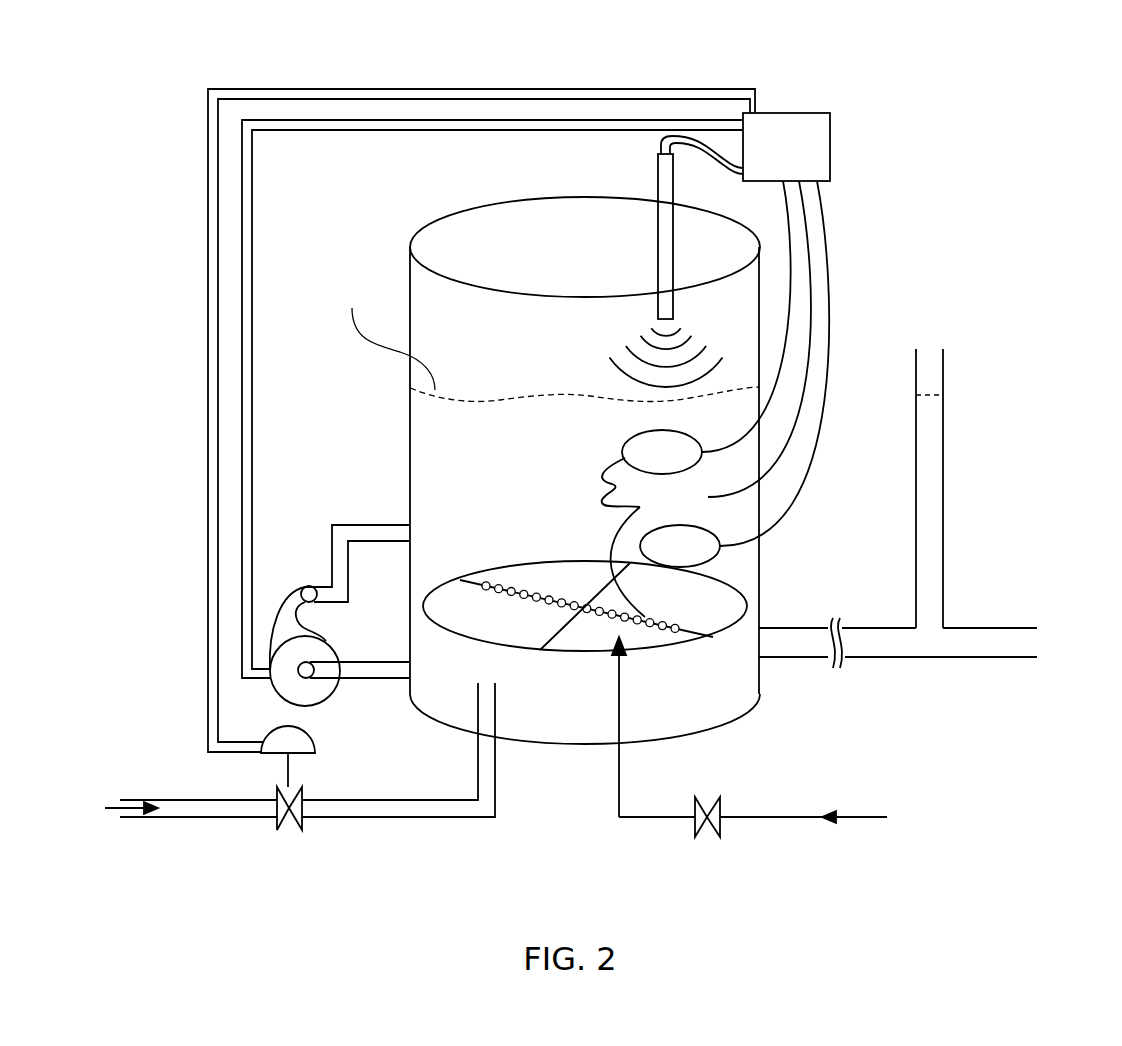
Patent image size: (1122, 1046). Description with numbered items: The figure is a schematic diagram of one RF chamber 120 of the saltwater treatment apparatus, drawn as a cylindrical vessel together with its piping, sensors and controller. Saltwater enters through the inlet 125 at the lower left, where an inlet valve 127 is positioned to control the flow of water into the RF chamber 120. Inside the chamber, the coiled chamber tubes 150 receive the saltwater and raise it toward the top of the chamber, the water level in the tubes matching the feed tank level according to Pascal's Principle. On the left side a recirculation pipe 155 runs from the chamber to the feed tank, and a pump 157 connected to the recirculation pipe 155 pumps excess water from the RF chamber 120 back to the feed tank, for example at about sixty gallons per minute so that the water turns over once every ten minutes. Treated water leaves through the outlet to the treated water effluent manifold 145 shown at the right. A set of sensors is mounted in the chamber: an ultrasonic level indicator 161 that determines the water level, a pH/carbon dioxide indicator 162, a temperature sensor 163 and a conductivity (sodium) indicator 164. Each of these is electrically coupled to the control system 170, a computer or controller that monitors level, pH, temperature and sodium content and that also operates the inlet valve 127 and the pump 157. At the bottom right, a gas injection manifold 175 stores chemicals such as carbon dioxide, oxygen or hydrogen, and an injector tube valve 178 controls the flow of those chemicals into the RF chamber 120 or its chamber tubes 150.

The RF chamber 120 is at (480, 240).
The inlet 125 is at (200, 817).
The inlet valve 127 is at (297, 822).
The treated water effluent manifold 145 is at (972, 645).
The chamber tubes 150 is at (695, 642).
The recirculation pipe 155 is at (373, 522).
The pump 157 is at (285, 623).
The ultrasonic level indicator 161 is at (658, 190).
The pH/carbon dioxide indicator 162 is at (622, 452).
The temperature sensor 163 is at (708, 497).
The conductivity (sodium) indicator 164 is at (720, 548).
The control system 170 is at (805, 113).
The gas injection manifold 175 is at (800, 817).
The injector tube valve 178 is at (717, 838).